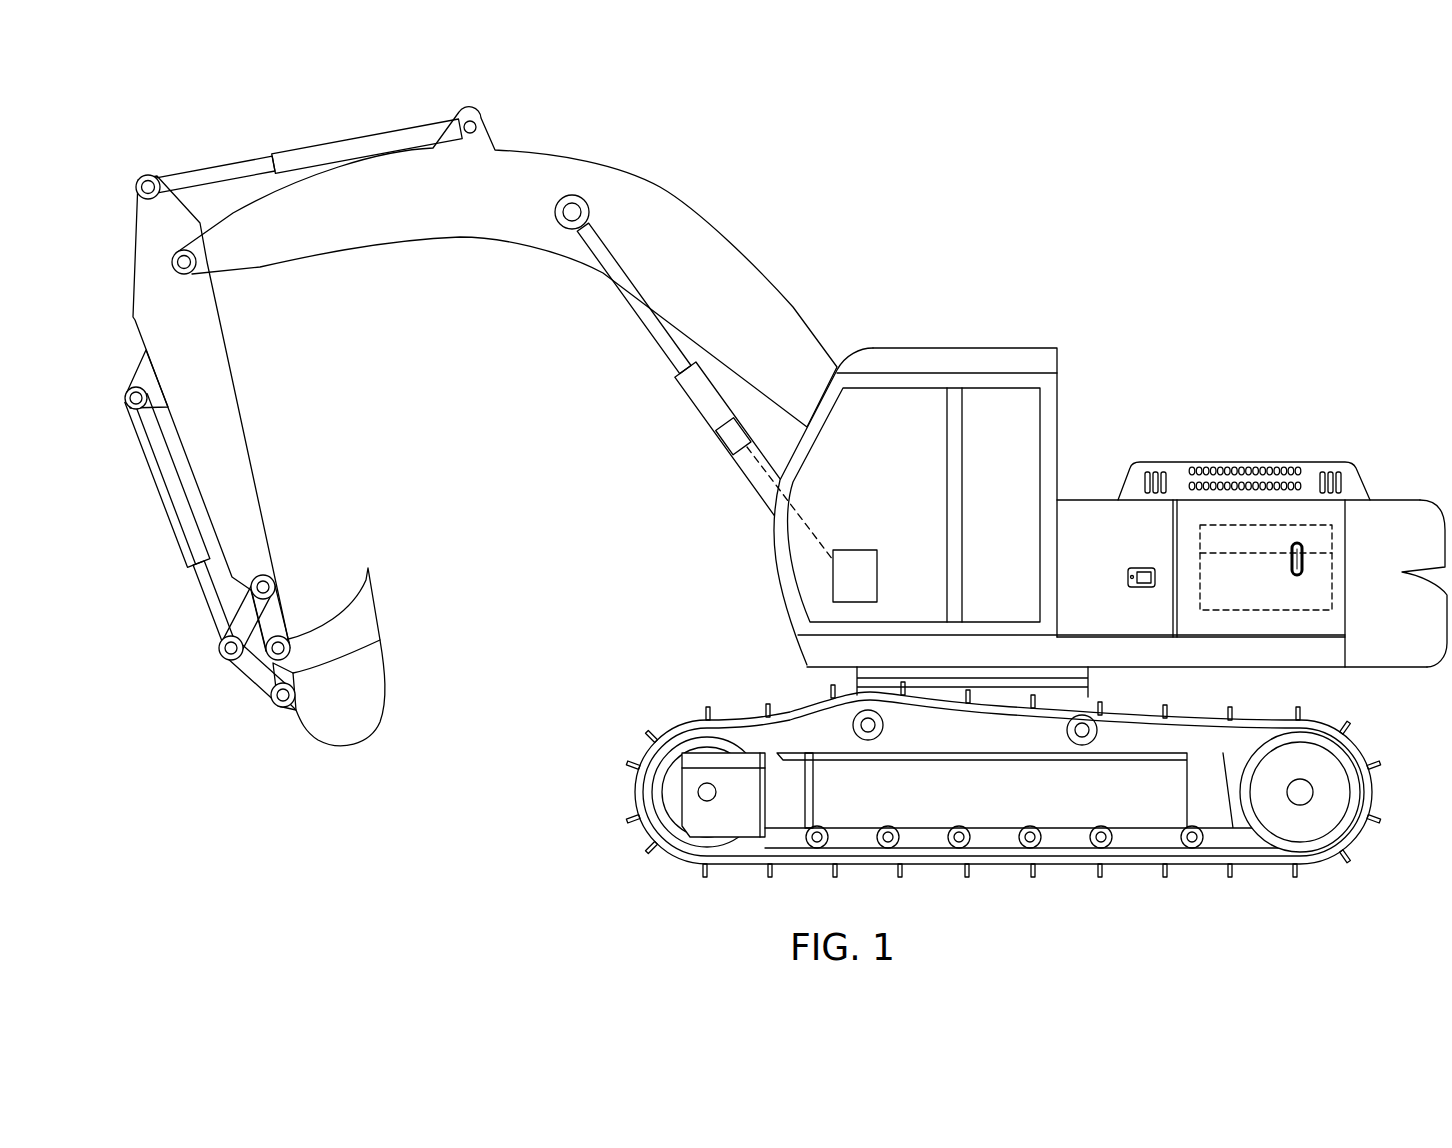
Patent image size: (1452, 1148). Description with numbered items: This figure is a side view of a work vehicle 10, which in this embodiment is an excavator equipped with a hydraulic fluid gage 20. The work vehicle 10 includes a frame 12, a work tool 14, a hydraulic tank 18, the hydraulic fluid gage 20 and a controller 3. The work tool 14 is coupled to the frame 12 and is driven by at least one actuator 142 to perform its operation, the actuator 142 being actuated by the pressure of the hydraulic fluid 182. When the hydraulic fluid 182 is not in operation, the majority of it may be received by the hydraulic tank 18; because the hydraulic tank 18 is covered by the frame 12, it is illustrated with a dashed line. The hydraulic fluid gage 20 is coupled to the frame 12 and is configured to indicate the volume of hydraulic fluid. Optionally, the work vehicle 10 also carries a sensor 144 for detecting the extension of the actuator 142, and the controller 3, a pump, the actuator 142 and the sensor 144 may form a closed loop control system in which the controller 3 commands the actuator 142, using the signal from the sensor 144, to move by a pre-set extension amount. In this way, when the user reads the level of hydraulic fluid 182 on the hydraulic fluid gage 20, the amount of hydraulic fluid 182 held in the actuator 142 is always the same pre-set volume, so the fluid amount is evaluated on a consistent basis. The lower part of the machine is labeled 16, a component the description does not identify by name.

The work vehicle 10 is at (1318, 287).
The frame 12 is at (1405, 525).
The work tool 14 is at (673, 97).
The undercarriage / travel unit 16 is at (1367, 847).
The hydraulic tank 18 is at (1237, 520).
The hydraulic fluid gage 20 is at (1298, 540).
The actuator 142 is at (667, 410).
The sensor 144 is at (722, 437).
The hydraulic fluid 182 is at (1276, 597).
The controller 3 is at (866, 588).